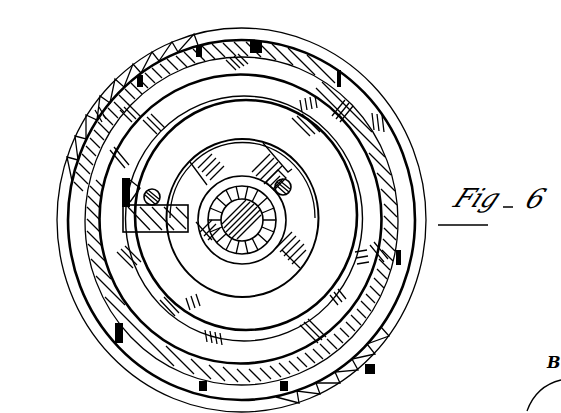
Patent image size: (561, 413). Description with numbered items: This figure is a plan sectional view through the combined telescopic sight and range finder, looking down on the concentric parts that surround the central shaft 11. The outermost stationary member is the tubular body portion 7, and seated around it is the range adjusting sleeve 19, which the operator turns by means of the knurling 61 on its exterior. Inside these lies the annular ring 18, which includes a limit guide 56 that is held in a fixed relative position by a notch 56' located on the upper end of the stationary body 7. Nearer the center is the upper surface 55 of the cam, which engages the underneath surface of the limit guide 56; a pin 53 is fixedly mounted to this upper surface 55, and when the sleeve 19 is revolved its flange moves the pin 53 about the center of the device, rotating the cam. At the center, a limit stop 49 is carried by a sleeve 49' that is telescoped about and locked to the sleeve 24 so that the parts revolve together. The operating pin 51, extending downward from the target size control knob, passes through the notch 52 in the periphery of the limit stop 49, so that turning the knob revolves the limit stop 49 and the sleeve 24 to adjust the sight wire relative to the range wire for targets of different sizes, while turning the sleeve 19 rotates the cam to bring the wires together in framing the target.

The tubular body portion 7 is at (140, 272).
The shaft 11 is at (217, 242).
The annular ring 18 is at (110, 217).
The range adjusting sleeve 19 is at (122, 132).
The sleeve 24 is at (237, 247).
The limit stop 49 is at (241, 164).
The sleeve 49' is at (251, 256).
The operating pin 51 is at (290, 176).
The notch 52 is at (293, 184).
The pin 53 is at (161, 197).
The upper surface 55 is at (285, 317).
The limit guide 56 is at (155, 218).
The notch 56' is at (151, 179).
The knurling 61 is at (358, 366).